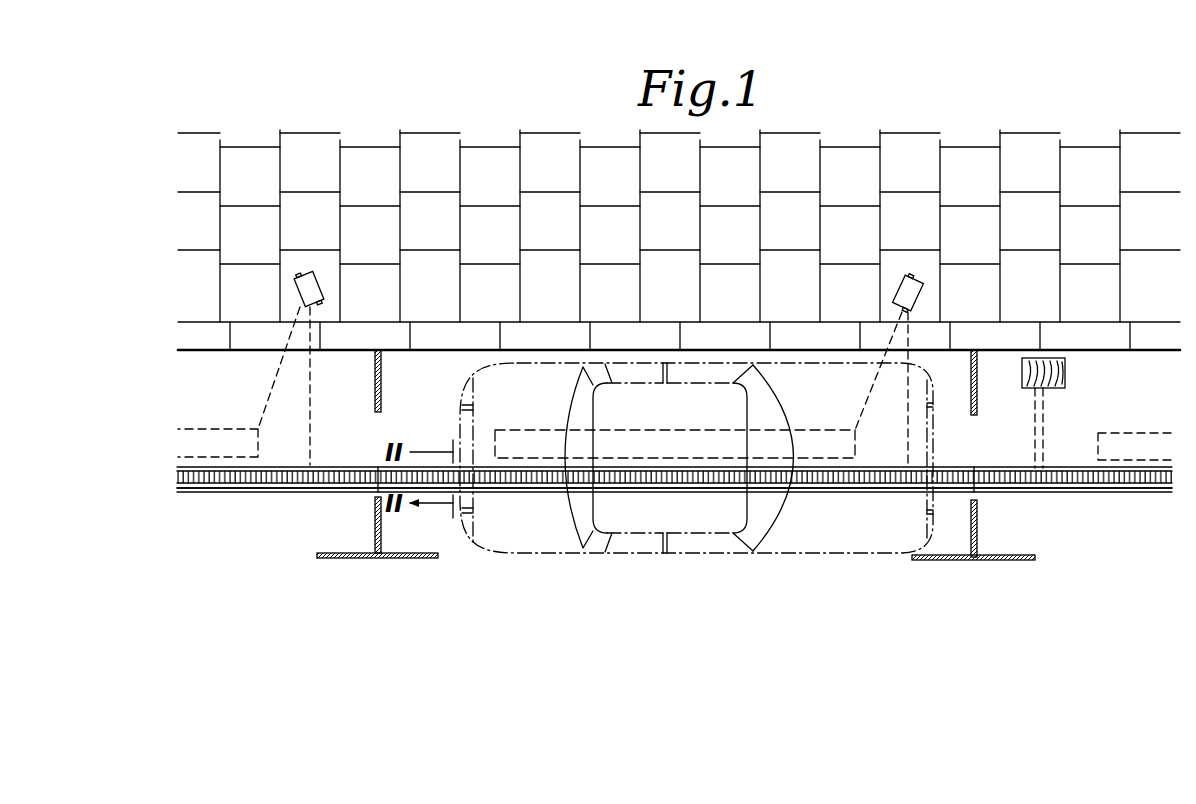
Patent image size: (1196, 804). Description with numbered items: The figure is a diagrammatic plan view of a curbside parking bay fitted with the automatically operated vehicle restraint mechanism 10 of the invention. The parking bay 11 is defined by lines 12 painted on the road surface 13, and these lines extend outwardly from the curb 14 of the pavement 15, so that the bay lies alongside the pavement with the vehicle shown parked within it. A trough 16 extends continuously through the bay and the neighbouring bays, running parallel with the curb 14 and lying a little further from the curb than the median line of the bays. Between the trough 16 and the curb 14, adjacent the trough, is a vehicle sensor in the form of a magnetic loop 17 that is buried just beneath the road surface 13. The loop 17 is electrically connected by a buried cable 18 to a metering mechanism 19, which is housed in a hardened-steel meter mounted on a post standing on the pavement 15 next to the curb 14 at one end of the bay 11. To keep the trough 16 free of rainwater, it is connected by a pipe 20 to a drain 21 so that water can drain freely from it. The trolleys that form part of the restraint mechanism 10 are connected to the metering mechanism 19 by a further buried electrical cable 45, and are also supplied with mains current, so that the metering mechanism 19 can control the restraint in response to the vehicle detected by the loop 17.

The vehicle restraint mechanism 10 is at (774, 560).
The curbside parking bay 11 is at (416, 566).
The lines 12 is at (375, 521).
The road surface 13 is at (654, 683).
The curb 14 is at (432, 355).
The pavement 15 is at (620, 254).
The trough 16 is at (539, 485).
The magnetic loop 17 is at (824, 464).
The cable 18 is at (862, 408).
The metering mechanism 19 is at (895, 290).
The pipe 20 is at (1052, 440).
The drain 21 is at (1068, 372).
The electrical cable 45 is at (908, 433).